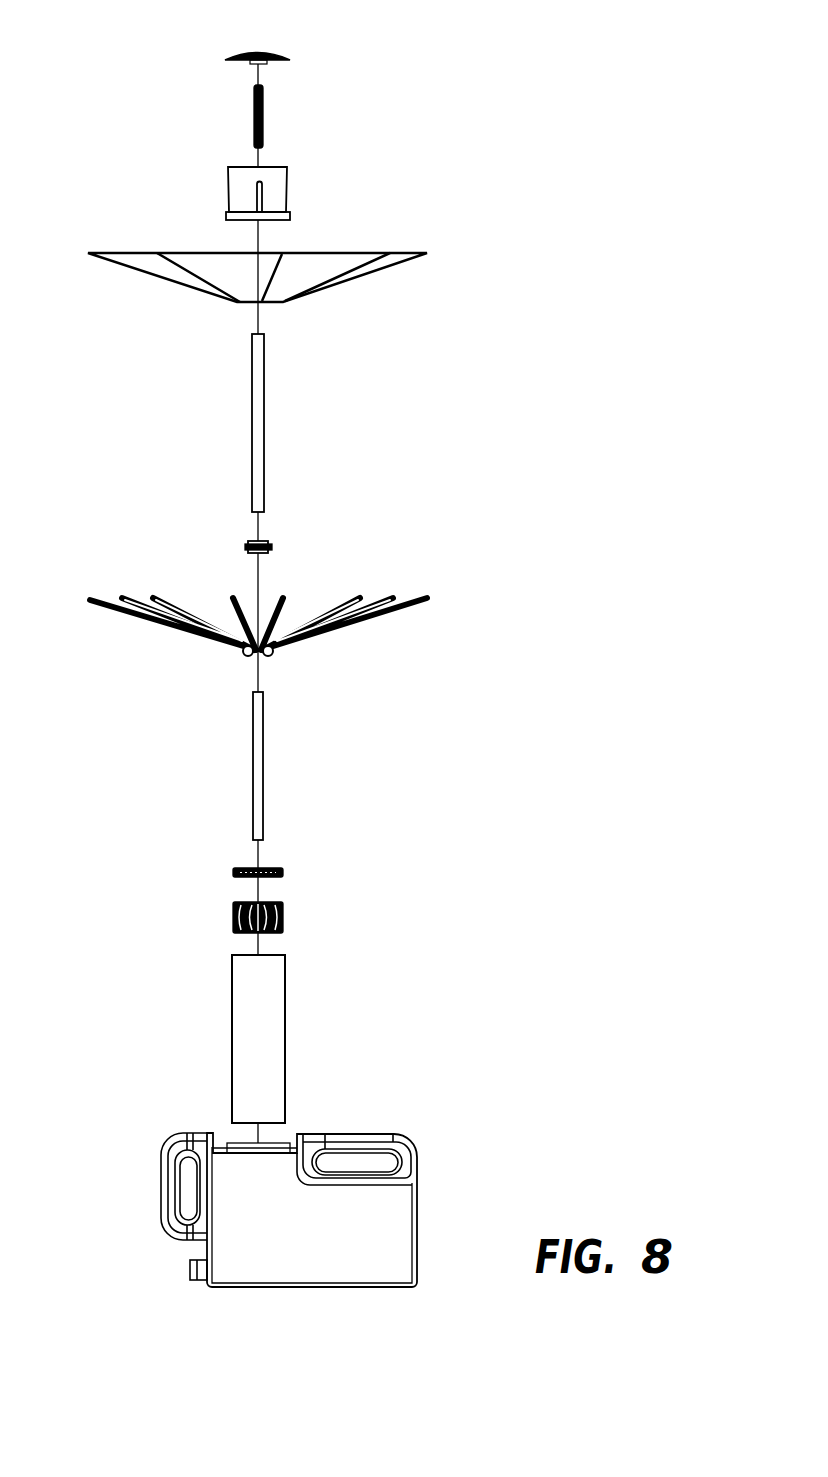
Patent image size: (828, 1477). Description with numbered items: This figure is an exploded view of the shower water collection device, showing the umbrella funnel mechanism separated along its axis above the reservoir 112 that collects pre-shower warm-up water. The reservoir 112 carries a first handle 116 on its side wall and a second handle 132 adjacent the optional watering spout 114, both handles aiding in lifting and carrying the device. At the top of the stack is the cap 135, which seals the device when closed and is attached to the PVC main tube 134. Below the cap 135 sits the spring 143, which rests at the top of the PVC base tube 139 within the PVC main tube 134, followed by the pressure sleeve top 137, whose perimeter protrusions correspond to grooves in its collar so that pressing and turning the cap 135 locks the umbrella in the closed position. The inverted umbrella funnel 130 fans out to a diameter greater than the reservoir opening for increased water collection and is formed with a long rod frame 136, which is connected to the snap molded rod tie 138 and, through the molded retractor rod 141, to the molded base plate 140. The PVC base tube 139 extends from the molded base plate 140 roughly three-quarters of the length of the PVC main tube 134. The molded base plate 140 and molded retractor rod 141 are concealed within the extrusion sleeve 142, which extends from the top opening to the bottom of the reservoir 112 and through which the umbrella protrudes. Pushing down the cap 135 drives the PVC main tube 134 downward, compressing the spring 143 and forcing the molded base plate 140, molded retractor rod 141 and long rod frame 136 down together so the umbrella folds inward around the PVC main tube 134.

The reservoir 112 is at (333, 1240).
The watering spout 114 is at (190, 1268).
The first handle 116 is at (415, 1143).
The inverted umbrella funnel 130 is at (428, 253).
The second handle 132 is at (162, 1190).
The PVC main tube 134 is at (265, 440).
The cap 135 is at (291, 58).
The long rod frame 136 is at (428, 601).
The pressure sleeve top 137 is at (289, 189).
The snap molded rod tie 138 is at (274, 548).
The PVC base tube 139 is at (265, 757).
The molded base plate 140 is at (284, 873).
The molded retractor rod 141 is at (284, 922).
The extrusion sleeve 142 is at (285, 1050).
The spring 143 is at (264, 121).